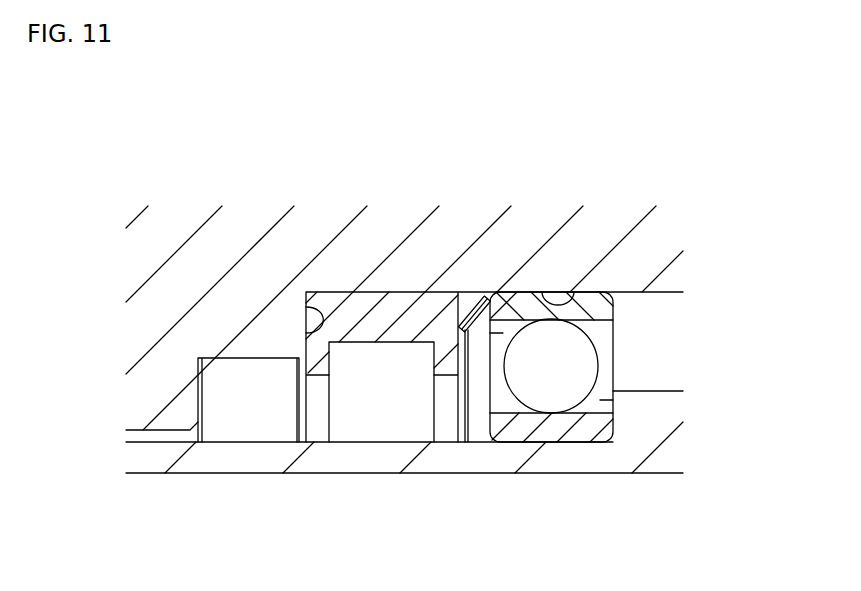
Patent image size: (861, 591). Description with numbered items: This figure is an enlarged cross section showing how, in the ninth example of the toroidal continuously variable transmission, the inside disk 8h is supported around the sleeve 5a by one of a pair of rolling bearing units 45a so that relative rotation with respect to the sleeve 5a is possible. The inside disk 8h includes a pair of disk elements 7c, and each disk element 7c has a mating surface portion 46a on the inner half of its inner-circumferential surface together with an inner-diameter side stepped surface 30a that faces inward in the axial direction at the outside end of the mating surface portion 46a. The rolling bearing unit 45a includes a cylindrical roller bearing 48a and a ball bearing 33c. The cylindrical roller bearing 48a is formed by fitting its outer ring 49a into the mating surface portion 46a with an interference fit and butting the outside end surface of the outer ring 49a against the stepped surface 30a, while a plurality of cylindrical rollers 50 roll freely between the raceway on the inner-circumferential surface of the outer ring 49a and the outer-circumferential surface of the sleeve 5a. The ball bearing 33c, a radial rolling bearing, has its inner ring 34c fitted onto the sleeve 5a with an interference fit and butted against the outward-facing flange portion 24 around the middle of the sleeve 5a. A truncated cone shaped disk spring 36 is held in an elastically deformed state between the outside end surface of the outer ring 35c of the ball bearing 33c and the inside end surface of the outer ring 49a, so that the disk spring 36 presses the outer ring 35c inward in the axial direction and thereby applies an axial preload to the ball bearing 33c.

The disk element 7c is at (240, 247).
The inside disk 8h is at (339, 207).
The outer ring 49a is at (385, 318).
The inner-diameter side stepped surface 30a is at (305, 332).
The cylindrical roller bearing 48a is at (380, 420).
The cylindrical roller 50 is at (343, 420).
The disk spring 36 is at (470, 302).
The rolling bearing unit 45a is at (621, 339).
The mating surface portion 46a is at (565, 292).
The outer ring 35c is at (595, 308).
The inner ring 34c is at (524, 430).
The ball bearing 33c is at (572, 443).
The outward-facing flange portion 24 is at (652, 400).
The sleeve 5a is at (220, 458).